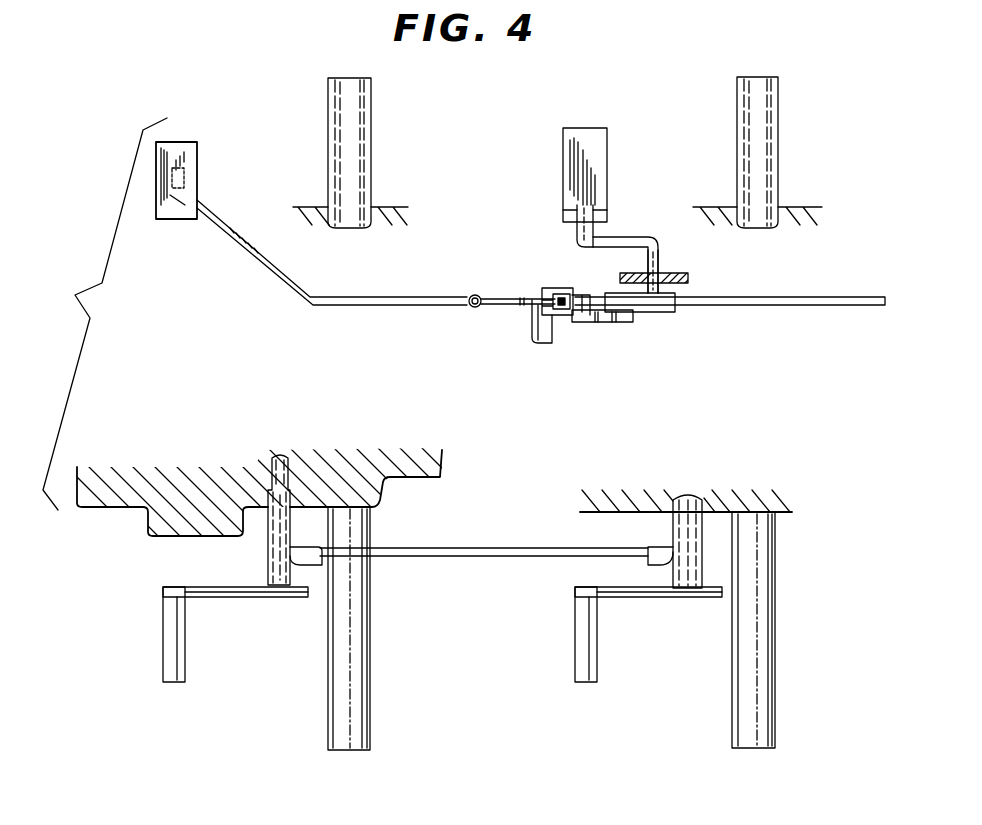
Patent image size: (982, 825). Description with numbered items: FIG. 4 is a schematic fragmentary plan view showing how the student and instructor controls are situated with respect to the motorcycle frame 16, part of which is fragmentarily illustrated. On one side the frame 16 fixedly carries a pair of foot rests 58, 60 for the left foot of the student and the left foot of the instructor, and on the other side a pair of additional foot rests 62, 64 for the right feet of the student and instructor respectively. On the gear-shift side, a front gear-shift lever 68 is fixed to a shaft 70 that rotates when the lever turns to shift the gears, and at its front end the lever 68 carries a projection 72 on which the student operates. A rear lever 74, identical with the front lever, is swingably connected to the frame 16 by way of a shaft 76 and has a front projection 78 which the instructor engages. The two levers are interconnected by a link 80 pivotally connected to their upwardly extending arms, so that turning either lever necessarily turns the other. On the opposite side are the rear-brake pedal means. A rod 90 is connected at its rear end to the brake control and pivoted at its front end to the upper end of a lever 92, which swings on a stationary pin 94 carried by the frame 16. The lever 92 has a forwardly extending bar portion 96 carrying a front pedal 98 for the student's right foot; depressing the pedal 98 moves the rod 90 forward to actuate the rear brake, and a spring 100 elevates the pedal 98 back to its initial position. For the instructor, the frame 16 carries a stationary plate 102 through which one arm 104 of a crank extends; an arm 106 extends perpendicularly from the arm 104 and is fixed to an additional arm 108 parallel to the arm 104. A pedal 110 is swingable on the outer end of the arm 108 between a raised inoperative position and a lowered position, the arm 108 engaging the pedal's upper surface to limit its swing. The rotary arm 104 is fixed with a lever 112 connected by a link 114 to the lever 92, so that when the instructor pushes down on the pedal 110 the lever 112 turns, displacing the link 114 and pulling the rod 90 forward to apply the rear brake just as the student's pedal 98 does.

The frame 16 is at (385, 212).
The foot rest 58 is at (372, 695).
The foot rest 60 is at (770, 683).
The foot rest 62 is at (362, 128).
The foot rest 64 is at (770, 137).
The front gear-shift lever 68 is at (227, 593).
The shaft 70 is at (270, 535).
The projection 72 is at (167, 667).
The rear lever 74 is at (665, 600).
The shaft 76 is at (672, 523).
The front projection 78 is at (572, 675).
The link 80 is at (480, 557).
The rod 90 is at (748, 308).
The lever 92 is at (533, 290).
The stationary pin 94 is at (533, 330).
The bar portion 96 is at (402, 306).
The front pedal 98 is at (185, 155).
The spring 100 is at (480, 294).
The stationary plate 102 is at (683, 273).
The arm 104 is at (660, 257).
The arm 106 is at (617, 242).
The additional arm 108 is at (580, 225).
The pedal 110 is at (600, 160).
The lever 112 is at (660, 315).
The link 114 is at (597, 322).